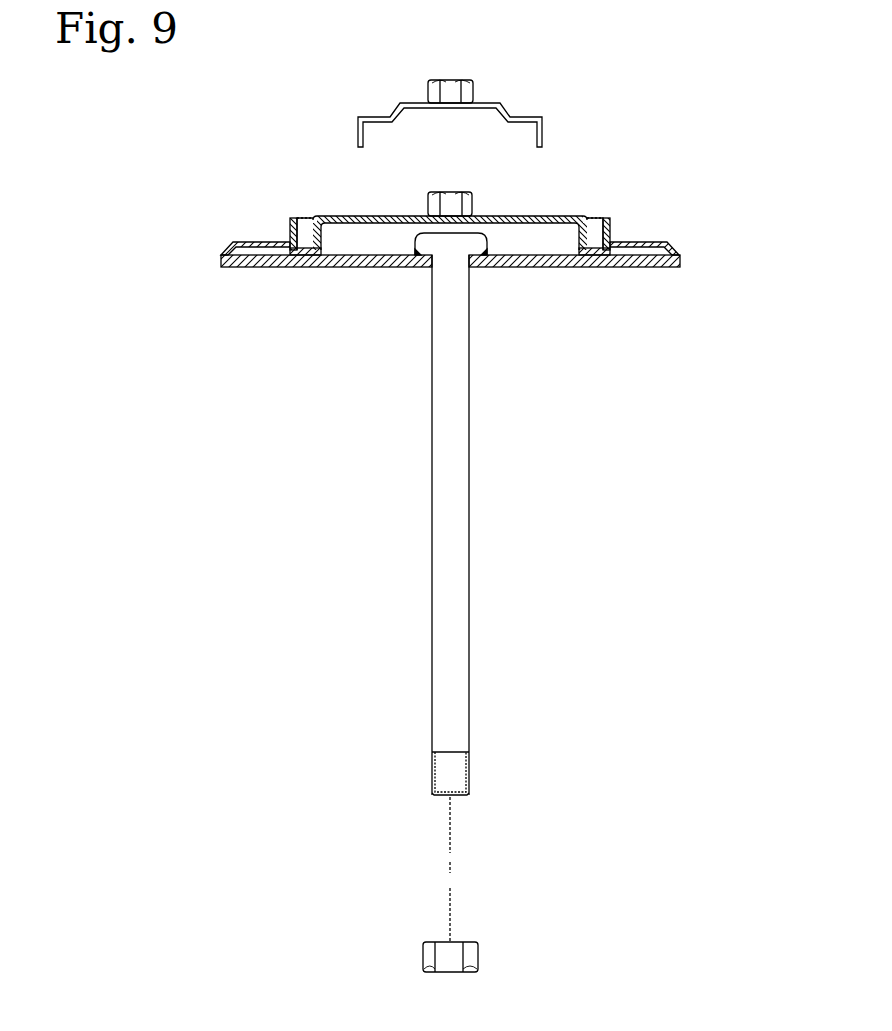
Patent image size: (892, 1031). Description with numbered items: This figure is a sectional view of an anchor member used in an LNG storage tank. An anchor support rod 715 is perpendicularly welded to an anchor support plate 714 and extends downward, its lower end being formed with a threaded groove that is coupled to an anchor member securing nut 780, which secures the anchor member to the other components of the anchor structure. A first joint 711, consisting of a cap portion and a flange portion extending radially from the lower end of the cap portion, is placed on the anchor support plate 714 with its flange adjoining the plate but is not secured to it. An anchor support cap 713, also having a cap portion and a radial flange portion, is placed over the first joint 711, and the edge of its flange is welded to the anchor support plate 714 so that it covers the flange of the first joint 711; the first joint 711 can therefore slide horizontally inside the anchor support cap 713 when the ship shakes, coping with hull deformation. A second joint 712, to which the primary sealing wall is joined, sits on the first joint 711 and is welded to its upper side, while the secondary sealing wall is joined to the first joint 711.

The first joint 711 is at (549, 214).
The second joint 712 is at (544, 132).
The anchor support cap 713 is at (613, 228).
The anchor support plate 714 is at (563, 268).
The anchor support rod 715 is at (470, 433).
The anchor member securing nut 780 is at (480, 955).